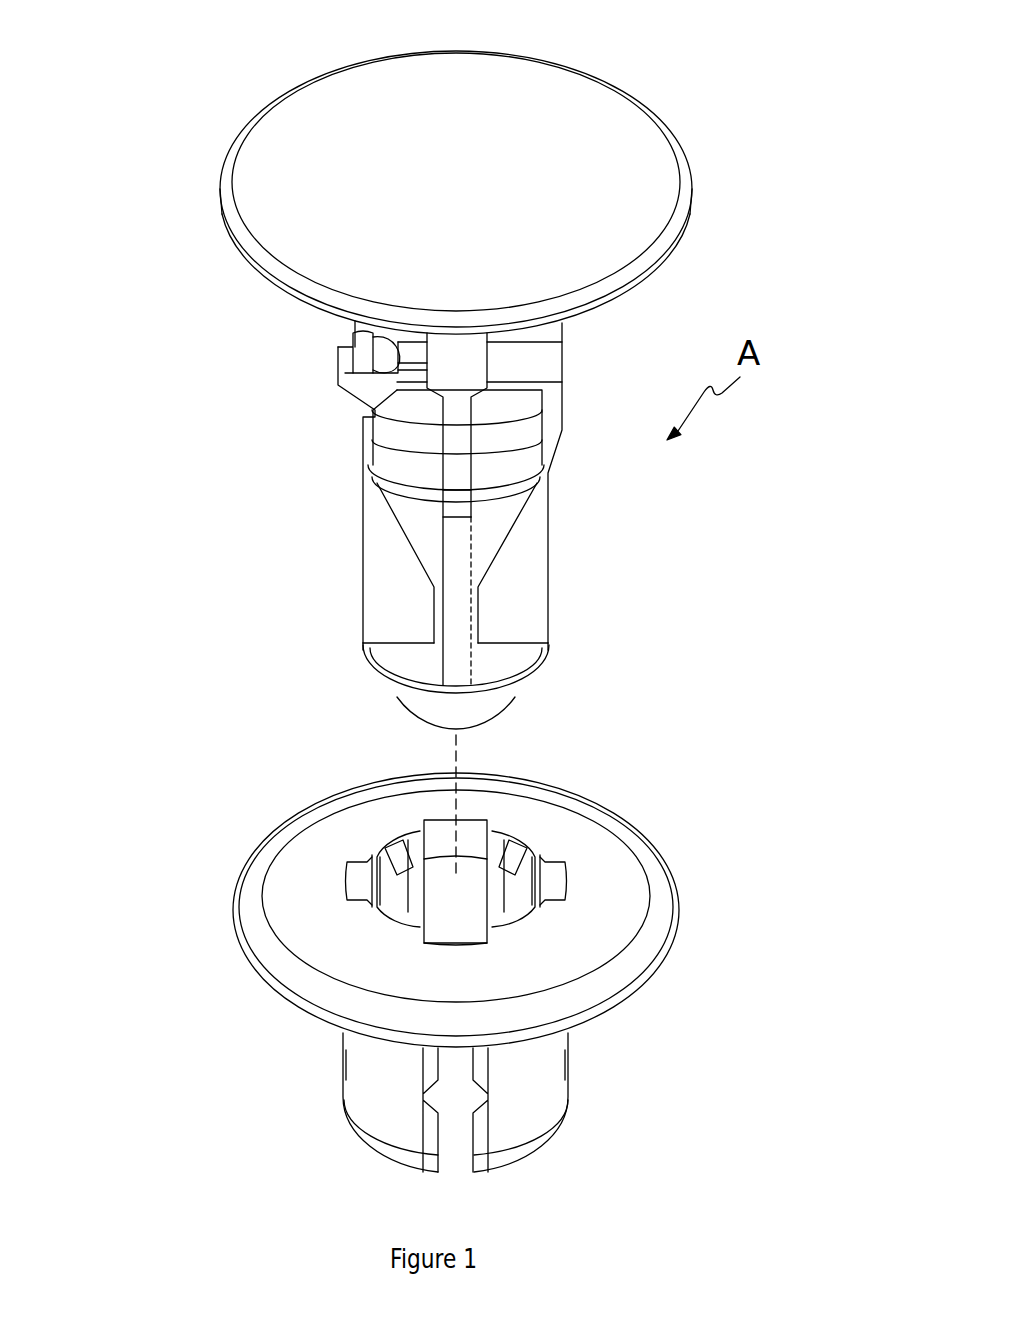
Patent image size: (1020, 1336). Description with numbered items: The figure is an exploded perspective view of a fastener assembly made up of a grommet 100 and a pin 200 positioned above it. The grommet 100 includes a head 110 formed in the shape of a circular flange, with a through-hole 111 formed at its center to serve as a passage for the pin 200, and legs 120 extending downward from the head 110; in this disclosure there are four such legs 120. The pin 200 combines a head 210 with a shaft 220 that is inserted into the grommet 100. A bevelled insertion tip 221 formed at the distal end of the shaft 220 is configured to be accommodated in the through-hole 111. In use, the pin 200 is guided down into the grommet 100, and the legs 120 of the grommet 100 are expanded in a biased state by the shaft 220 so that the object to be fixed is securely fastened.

The grommet 100 is at (274, 1047).
The head 110 is at (607, 832).
The through-hole 111 is at (465, 868).
The leg 120 is at (562, 1073).
The pin 200 is at (244, 318).
The head 210 is at (582, 85).
The shaft 220 is at (548, 548).
The bevelled insertion tip 221 is at (402, 698).